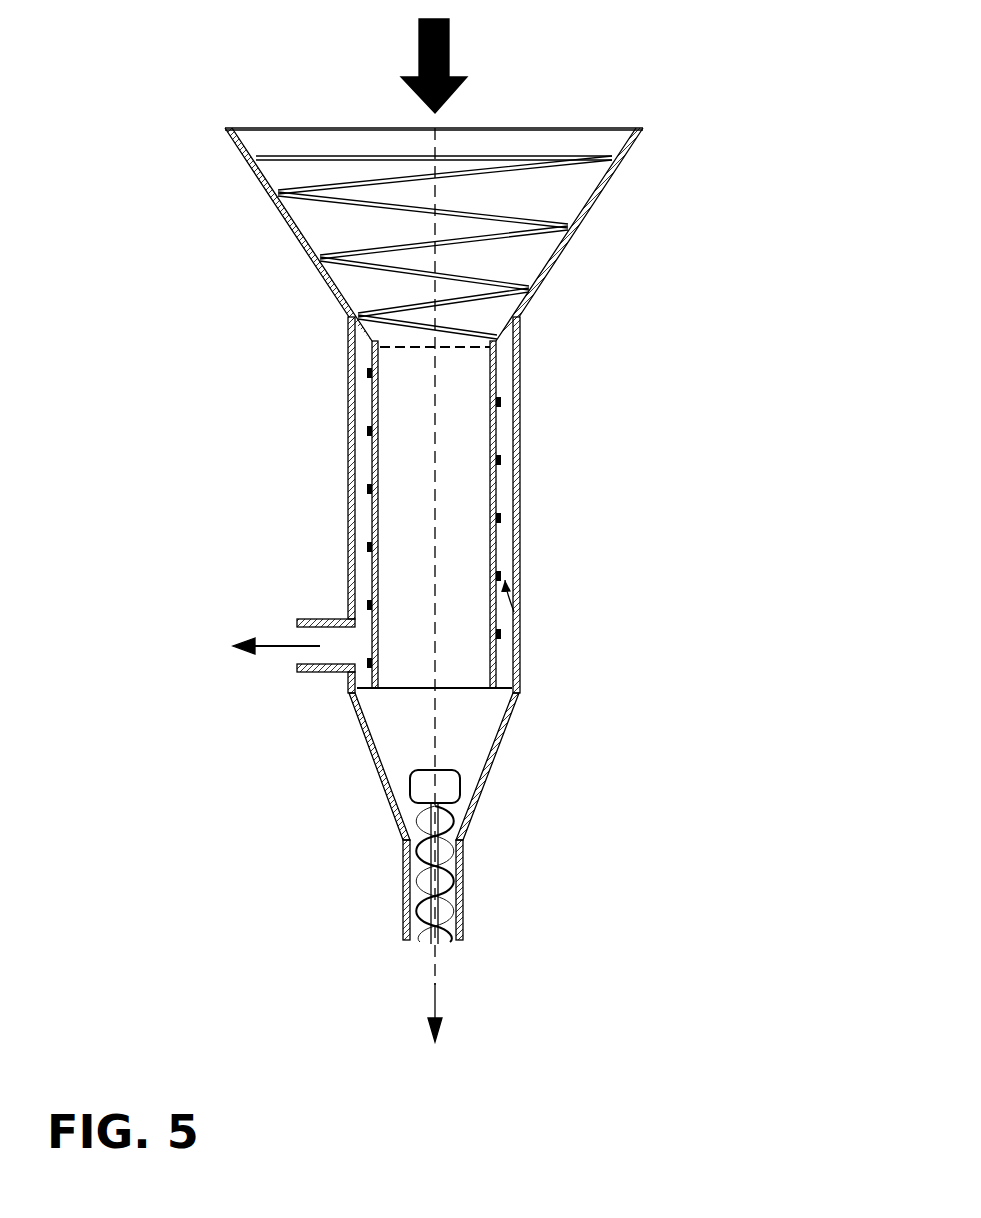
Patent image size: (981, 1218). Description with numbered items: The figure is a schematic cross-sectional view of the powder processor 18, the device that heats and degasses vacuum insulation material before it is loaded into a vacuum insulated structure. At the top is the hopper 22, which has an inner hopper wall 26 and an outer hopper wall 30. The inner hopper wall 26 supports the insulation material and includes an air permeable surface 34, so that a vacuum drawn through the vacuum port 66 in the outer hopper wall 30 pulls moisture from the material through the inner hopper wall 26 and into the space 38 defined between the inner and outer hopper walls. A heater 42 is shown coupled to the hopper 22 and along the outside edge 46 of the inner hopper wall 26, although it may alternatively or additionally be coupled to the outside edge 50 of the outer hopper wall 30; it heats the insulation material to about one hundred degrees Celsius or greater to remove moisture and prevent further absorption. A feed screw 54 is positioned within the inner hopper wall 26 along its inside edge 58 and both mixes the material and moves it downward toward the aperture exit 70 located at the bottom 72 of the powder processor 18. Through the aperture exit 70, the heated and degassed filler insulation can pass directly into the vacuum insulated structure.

The powder processor 18 is at (235, 305).
The hopper 22 is at (585, 214).
The heater 42 is at (492, 212).
The air permeable surface 34 is at (470, 390).
The outside edge of the inner hopper wall 46 is at (372, 406).
The inner hopper wall 26 is at (497, 553).
The outside edge of the outer hopper wall 50 is at (348, 480).
The outer hopper wall 30 is at (520, 420).
The space 38 is at (514, 612).
The vacuum port 66 is at (318, 619).
The bottom of the powder processor 72 is at (367, 809).
The inside edge of the inner hopper wall 58 is at (474, 790).
The feed screw 54 is at (437, 860).
The aperture exit 70 is at (448, 943).